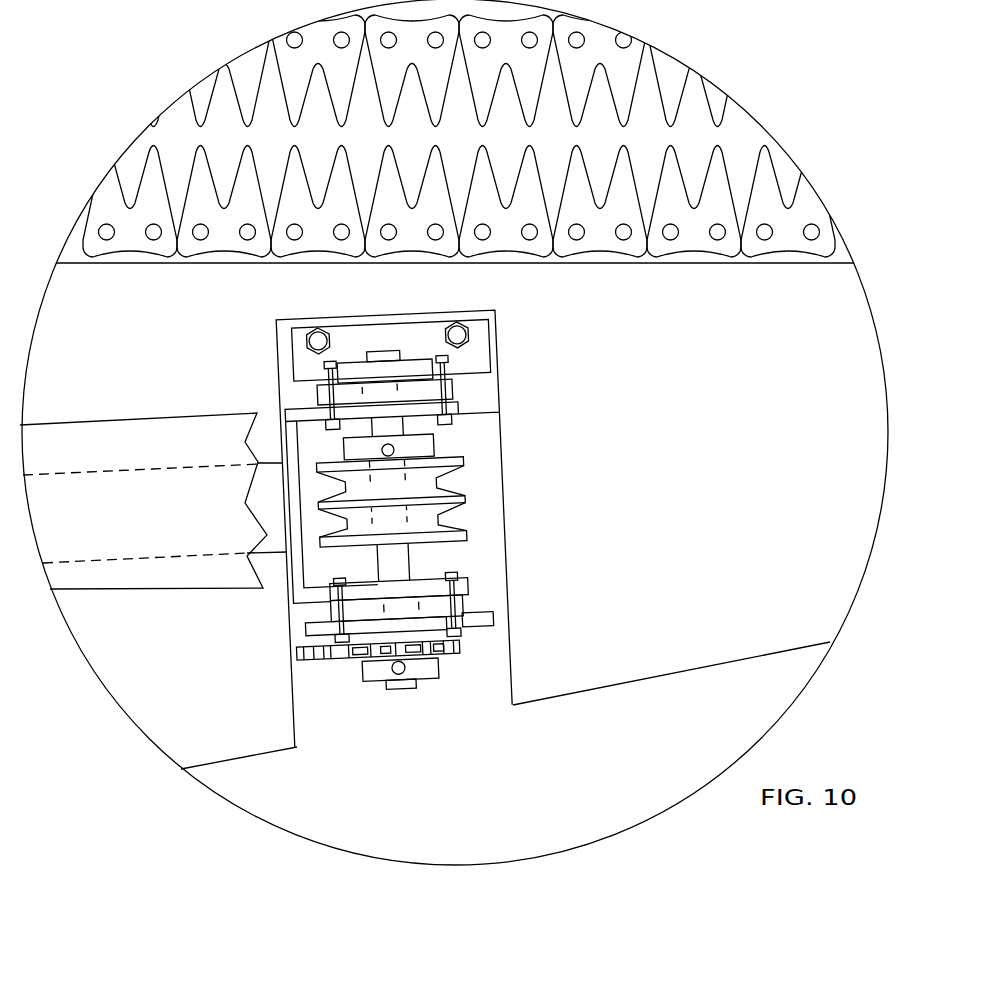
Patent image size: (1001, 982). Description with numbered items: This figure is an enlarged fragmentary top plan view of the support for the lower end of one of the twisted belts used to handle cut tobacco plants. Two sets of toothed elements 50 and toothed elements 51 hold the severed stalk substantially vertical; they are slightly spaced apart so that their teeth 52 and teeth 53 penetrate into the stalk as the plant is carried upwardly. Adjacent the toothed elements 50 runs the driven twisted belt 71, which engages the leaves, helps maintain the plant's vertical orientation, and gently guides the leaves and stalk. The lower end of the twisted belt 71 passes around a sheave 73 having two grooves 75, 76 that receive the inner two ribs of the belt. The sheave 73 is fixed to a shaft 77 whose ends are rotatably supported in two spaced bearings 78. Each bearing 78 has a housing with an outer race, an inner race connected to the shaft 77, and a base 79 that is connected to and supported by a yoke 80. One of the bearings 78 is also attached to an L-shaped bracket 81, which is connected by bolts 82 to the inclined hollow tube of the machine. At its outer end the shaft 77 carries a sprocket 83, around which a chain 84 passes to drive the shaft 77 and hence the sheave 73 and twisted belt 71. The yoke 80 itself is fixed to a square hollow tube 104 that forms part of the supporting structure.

The toothed elements 50 is at (717, 190).
The toothed elements 51 is at (673, 97).
The teeth 52 is at (248, 143).
The teeth 53 is at (673, 97).
The twisted belt 71 is at (58, 423).
The sheave 73 is at (489, 493).
The groove 75 is at (450, 472).
The groove 76 is at (443, 520).
The shaft 77 is at (410, 567).
The bearings 78 is at (472, 389).
The base 79 is at (315, 398).
The yoke 80 is at (287, 510).
The L-shaped bracket 81 is at (425, 320).
The bolts 82 is at (470, 340).
The sprocket 83 is at (442, 678).
The chain 84 is at (332, 667).
The square hollow tube 104 is at (278, 462).